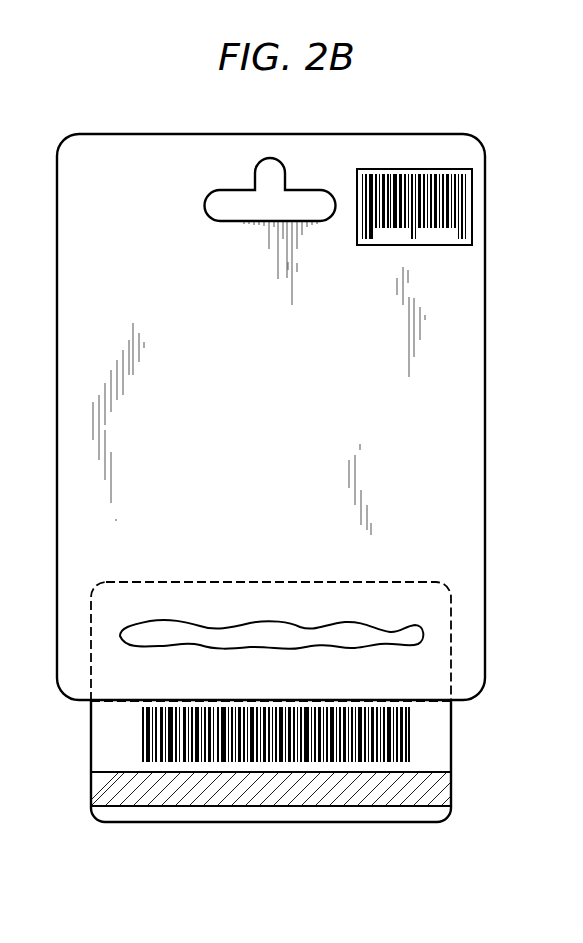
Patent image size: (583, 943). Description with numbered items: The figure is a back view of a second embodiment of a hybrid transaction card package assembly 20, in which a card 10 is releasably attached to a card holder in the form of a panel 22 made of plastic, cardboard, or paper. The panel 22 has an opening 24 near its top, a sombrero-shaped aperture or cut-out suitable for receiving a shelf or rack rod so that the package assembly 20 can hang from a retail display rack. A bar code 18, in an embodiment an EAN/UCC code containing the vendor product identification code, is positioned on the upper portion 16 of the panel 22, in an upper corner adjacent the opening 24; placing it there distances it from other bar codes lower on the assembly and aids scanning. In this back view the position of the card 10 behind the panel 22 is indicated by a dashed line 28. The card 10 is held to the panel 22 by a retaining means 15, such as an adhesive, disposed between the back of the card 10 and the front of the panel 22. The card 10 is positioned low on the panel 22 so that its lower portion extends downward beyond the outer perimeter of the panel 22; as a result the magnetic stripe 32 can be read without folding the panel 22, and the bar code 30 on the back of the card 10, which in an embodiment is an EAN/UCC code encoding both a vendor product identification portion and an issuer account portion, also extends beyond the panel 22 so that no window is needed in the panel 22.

The hybrid transaction card package assembly 20 is at (166, 107).
The upper portion of the panel 16 is at (485, 228).
The panel 22 is at (466, 389).
The opening 24 is at (272, 176).
The bar code 18 is at (412, 169).
The card 10 is at (90, 738).
The dashed line 28 is at (453, 636).
The retaining means 15 is at (171, 620).
The bar code 30 is at (406, 733).
The magnetic stripe 32 is at (453, 782).